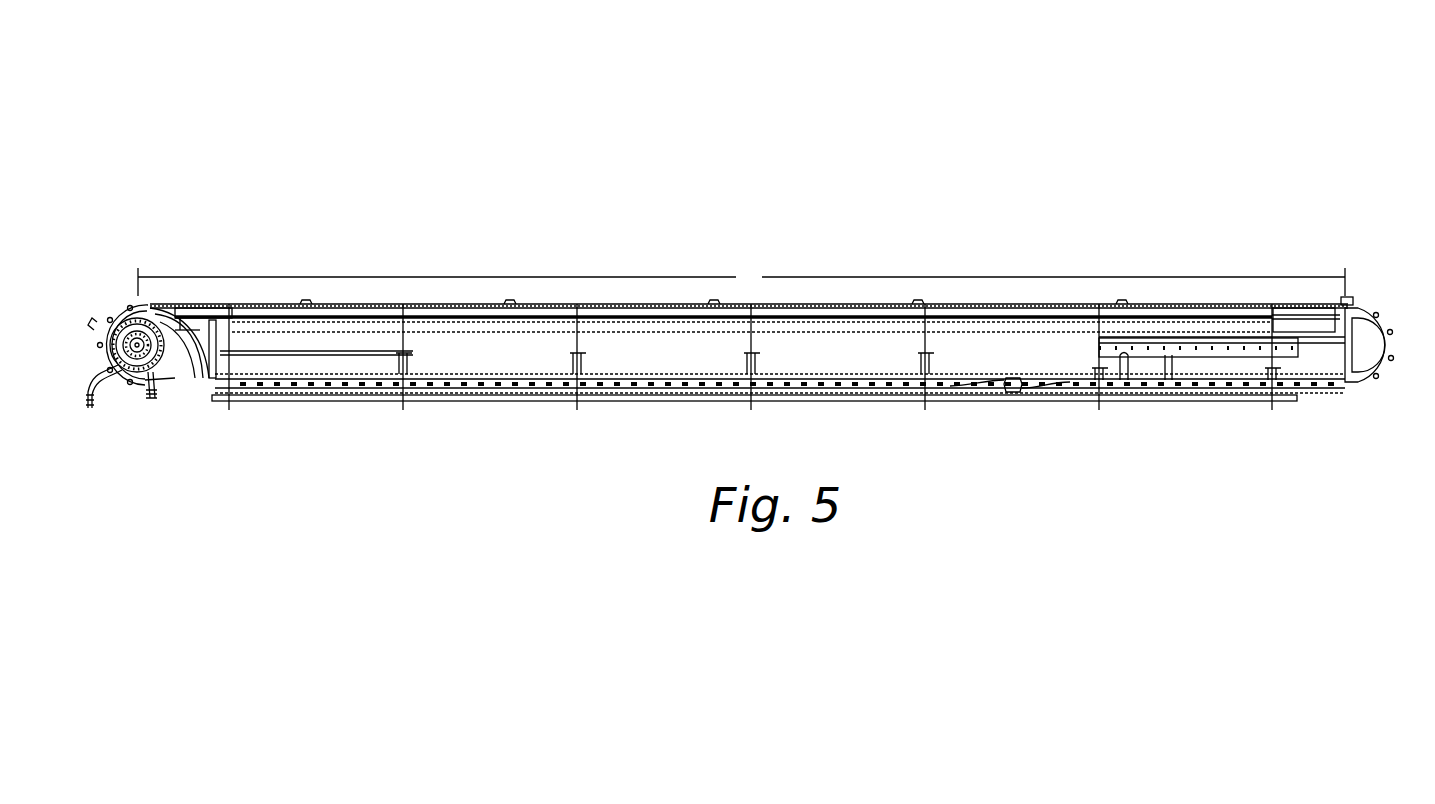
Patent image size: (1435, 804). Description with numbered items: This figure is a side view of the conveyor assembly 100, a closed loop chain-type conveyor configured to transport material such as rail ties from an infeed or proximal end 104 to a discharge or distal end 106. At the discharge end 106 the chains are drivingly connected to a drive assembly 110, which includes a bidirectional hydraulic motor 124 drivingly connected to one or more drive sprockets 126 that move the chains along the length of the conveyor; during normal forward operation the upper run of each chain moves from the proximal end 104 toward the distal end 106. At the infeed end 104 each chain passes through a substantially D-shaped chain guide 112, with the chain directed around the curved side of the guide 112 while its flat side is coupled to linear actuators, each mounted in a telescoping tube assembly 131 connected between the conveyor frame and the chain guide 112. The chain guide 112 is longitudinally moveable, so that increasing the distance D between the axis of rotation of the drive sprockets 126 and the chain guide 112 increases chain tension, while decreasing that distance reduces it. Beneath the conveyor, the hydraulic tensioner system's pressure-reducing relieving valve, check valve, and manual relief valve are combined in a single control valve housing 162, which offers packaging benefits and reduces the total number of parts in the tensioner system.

The conveyor assembly 100 is at (741, 281).
The infeed or proximal end 104 is at (1381, 319).
The discharge or distal end 106 is at (166, 329).
The drive assembly 110 is at (160, 392).
The chain guide 112 is at (1368, 380).
The hydraulic motor 124 is at (134, 366).
The drive sprockets 126 is at (113, 348).
The telescoping tube assembly 131 is at (1190, 350).
The control valve housing 162 is at (1015, 394).